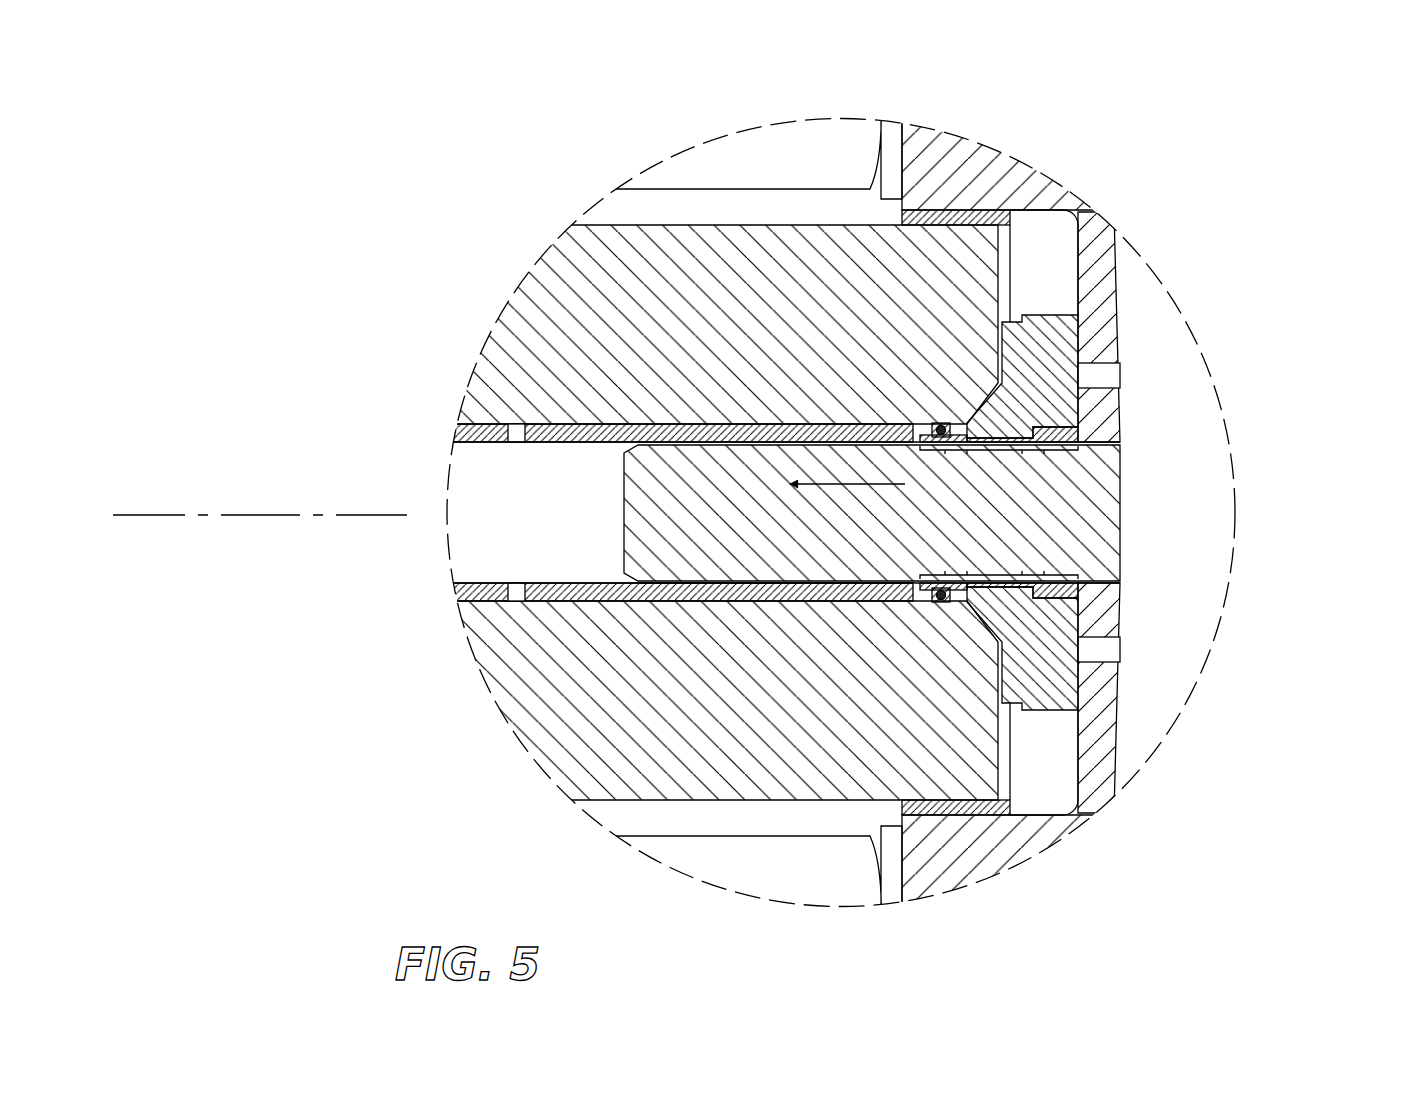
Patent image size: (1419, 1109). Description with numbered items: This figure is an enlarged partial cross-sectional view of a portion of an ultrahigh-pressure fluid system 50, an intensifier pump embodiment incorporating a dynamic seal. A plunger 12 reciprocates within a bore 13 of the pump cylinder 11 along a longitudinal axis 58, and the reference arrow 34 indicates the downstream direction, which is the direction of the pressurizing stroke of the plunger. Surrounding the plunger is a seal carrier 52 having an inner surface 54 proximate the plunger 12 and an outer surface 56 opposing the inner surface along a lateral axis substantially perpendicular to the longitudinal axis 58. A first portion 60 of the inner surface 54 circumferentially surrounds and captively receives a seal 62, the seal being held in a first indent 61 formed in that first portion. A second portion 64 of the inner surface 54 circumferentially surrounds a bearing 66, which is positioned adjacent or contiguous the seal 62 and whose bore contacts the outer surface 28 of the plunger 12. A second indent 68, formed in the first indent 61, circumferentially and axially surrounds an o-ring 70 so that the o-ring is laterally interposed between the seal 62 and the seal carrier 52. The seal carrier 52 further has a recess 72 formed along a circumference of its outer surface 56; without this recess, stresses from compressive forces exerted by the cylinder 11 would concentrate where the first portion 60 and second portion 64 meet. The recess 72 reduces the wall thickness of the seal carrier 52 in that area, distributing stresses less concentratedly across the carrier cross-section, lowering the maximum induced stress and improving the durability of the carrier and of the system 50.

The pump cylinder 11 is at (688, 334).
The plunger 12 is at (642, 471).
The bore 13 is at (475, 562).
The outer surface 28 is at (662, 582).
The reference arrow 34 is at (850, 494).
The ultrahigh-pressure fluid system 50 is at (1266, 156).
The seal carrier 52 is at (1063, 343).
The inner surface 54 is at (1007, 576).
The outer surface 56 is at (936, 611).
The longitudinal axis 58 is at (218, 505).
The first portion 60 is at (1025, 457).
The first indent 61 is at (922, 574).
The seal 62 is at (939, 579).
The second portion 64 is at (945, 455).
The bearing 66 is at (1027, 593).
The second indent 68 is at (1003, 651).
The o-ring 70 is at (942, 423).
The recess 72 is at (968, 411).